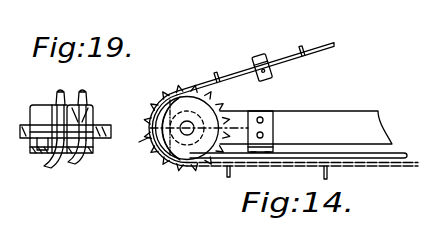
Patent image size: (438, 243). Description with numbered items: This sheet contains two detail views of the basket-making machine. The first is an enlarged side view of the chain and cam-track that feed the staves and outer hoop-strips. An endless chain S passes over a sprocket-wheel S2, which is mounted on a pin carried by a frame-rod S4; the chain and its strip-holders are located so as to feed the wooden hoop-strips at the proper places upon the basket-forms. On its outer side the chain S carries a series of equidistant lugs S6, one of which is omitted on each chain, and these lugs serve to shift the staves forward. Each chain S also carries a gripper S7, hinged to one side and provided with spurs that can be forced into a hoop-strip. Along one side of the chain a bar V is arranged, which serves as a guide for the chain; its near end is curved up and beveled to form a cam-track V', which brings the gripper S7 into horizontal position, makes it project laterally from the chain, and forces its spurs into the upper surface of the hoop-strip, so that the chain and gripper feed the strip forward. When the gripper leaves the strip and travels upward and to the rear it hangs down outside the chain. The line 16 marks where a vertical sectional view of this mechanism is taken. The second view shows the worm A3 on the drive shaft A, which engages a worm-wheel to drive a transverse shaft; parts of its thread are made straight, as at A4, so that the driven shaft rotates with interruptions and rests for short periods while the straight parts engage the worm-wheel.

In FIG. 14, the endless chain S is at (248, 99).
In FIG. 14, the sprocket-wheel S2 is at (188, 144).
In FIG. 14, the frame-rod S4 is at (306, 131).
In FIG. 14, the lug S6 is at (269, 106).
In FIG. 14, the gripper S7 is at (276, 68).
In FIG. 14, the bar V is at (302, 143).
In FIG. 14, the cam-track V' is at (153, 110).
In FIG. 14, the section line 16 16 is at (188, 216).
In FIG. 19, the shaft A is at (72, 127).
In FIG. 19, the worm A3 is at (65, 164).
In FIG. 19, the straight parts of the worm thread A4 is at (68, 103).